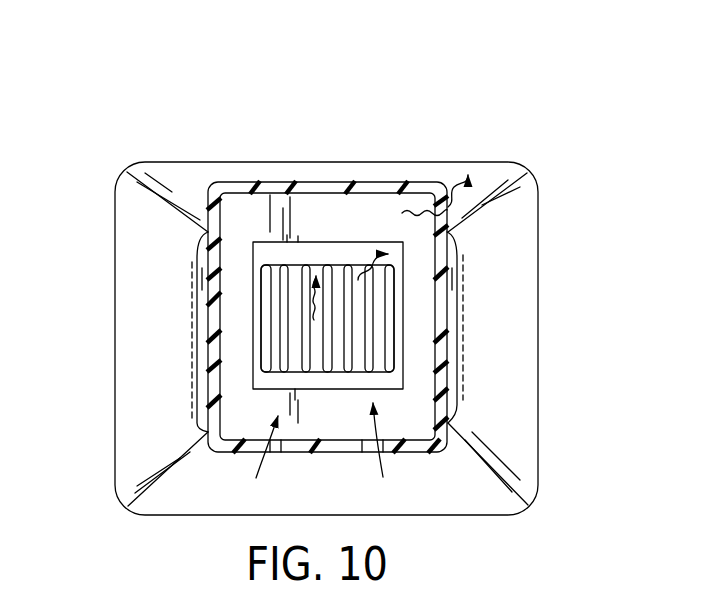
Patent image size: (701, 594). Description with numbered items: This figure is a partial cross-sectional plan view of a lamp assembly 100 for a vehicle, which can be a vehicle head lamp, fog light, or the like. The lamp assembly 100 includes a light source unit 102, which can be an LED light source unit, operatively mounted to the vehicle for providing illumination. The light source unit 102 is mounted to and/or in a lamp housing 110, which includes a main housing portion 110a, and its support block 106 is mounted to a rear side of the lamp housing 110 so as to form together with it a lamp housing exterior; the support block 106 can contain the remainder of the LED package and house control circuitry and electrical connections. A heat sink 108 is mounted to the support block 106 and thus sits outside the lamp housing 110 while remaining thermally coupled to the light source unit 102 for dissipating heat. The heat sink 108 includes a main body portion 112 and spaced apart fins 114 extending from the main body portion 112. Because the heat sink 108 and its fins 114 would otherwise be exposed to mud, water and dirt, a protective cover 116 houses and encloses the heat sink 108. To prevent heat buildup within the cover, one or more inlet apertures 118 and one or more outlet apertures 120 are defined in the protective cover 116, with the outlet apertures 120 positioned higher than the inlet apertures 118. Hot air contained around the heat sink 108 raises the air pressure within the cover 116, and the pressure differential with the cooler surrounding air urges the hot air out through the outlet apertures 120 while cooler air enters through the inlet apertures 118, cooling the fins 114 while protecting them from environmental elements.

The lamp assembly 100 is at (168, 127).
The light source unit 102 is at (302, 238).
The support block 106 is at (334, 252).
The heat sink 108 is at (394, 311).
The lamp housing 110 is at (120, 358).
The main housing portion 110a is at (515, 405).
The main body portion 112 is at (277, 292).
The fins 114 is at (306, 347).
The protective cover 116 is at (421, 181).
The inlet apertures 118 is at (368, 449).
The outlet apertures 120 is at (444, 221).